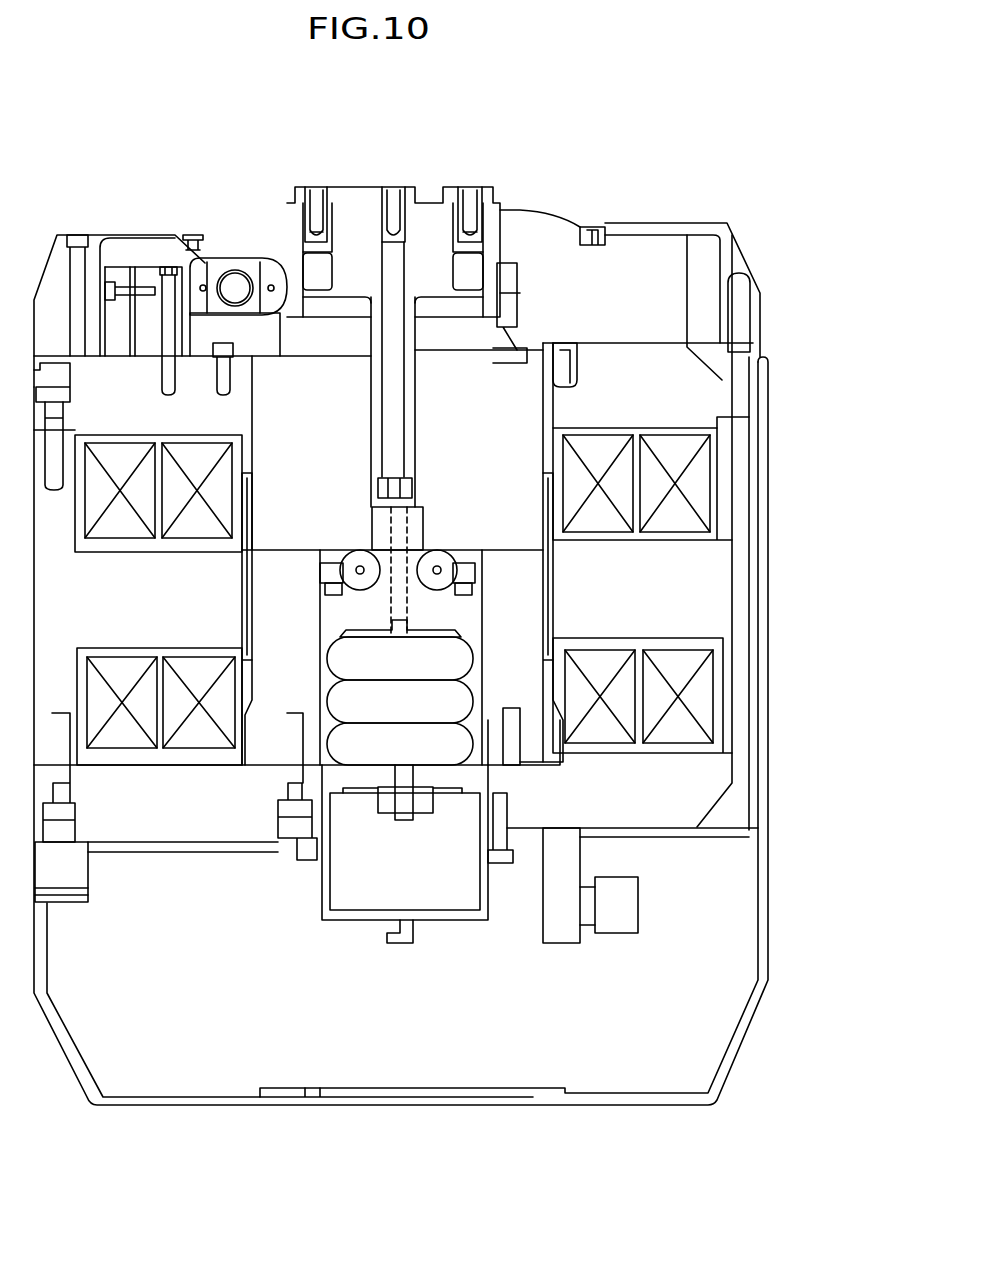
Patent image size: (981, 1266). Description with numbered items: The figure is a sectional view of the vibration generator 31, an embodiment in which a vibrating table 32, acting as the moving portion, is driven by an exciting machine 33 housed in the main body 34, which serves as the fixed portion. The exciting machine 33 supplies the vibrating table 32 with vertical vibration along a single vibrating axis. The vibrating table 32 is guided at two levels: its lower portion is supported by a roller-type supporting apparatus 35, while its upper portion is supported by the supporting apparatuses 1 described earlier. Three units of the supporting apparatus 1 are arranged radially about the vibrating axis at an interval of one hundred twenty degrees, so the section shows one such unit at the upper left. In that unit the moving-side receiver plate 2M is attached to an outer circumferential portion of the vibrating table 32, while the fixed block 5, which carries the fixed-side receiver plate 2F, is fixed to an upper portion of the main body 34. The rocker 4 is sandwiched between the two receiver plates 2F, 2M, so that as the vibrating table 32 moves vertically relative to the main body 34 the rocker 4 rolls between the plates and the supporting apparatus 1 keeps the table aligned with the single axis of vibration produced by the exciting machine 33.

The supporting apparatus 1 is at (212, 138).
The fixed block 5 is at (120, 267).
The fixed-side receiver plate 2F is at (187, 260).
The rocker 4 is at (230, 262).
The moving-side receiver plate 2M is at (285, 262).
The vibrating table 32 is at (353, 205).
The vibration generator 31 is at (634, 214).
The exciting machine 33 is at (703, 487).
The main body 34 is at (683, 380).
The roller-type supporting apparatus 35 is at (477, 570).